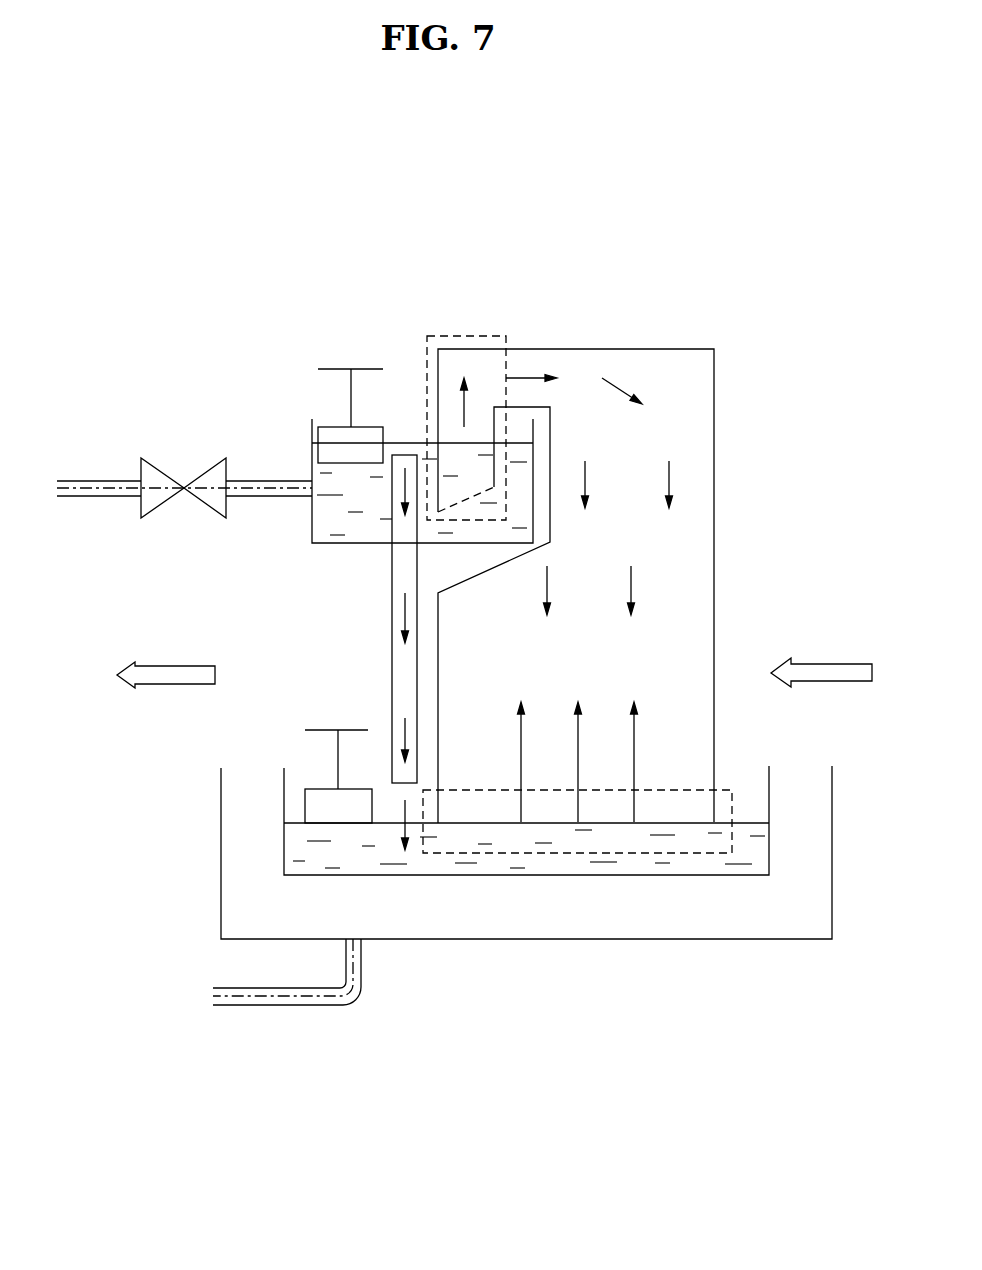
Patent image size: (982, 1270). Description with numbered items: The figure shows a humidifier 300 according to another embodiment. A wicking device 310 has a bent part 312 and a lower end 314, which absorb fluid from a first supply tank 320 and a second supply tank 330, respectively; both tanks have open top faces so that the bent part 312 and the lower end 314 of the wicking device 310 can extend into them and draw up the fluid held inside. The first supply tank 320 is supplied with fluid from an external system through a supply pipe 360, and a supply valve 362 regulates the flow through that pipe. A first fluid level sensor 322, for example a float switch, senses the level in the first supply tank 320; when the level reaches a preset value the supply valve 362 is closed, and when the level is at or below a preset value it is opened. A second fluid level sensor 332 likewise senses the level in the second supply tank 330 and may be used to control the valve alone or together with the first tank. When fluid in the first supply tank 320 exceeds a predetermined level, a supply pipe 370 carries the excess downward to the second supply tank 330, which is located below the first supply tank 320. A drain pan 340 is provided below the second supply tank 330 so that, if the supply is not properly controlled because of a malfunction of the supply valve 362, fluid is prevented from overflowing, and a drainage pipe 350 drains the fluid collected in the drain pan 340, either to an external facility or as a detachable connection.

The humidifier 300 is at (87, 267).
The wicking device 310 is at (648, 349).
The bent part 312 is at (465, 335).
The lower end 314 is at (630, 854).
The first supply tank 320 is at (312, 532).
The first fluid level sensor 322 is at (333, 368).
The second supply tank 330 is at (526, 876).
The second fluid level sensor 332 is at (320, 728).
The drain pan 340 is at (221, 853).
The drainage pipe 350 is at (280, 998).
The supply pipe 360 is at (102, 485).
The supply valve 362 is at (206, 482).
The supply pipe 370 is at (392, 618).